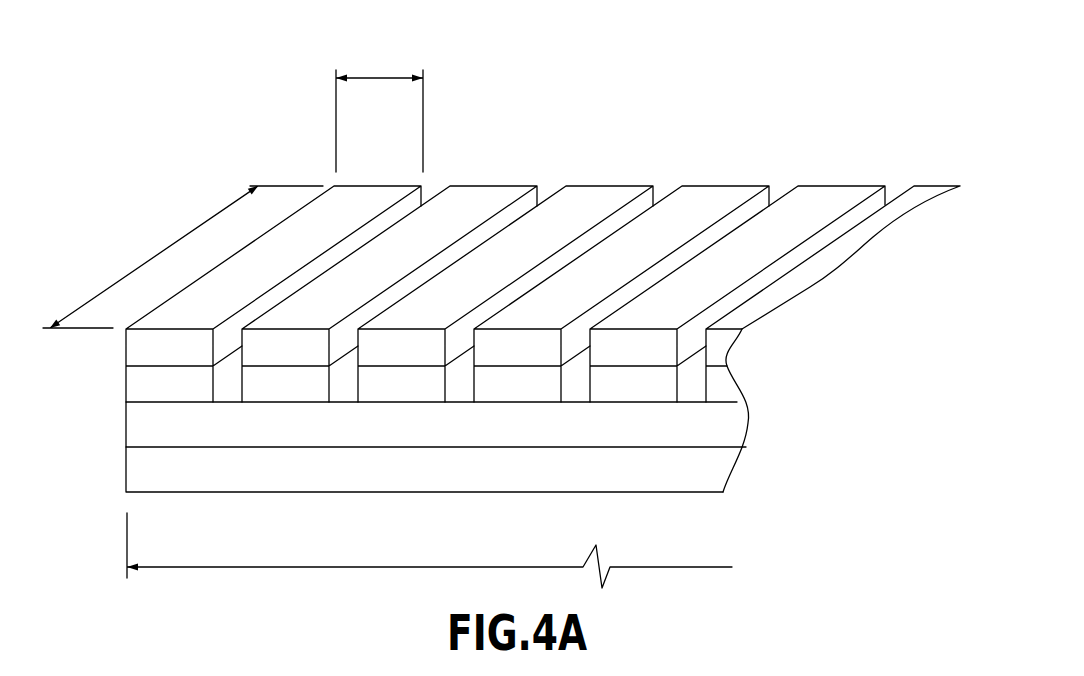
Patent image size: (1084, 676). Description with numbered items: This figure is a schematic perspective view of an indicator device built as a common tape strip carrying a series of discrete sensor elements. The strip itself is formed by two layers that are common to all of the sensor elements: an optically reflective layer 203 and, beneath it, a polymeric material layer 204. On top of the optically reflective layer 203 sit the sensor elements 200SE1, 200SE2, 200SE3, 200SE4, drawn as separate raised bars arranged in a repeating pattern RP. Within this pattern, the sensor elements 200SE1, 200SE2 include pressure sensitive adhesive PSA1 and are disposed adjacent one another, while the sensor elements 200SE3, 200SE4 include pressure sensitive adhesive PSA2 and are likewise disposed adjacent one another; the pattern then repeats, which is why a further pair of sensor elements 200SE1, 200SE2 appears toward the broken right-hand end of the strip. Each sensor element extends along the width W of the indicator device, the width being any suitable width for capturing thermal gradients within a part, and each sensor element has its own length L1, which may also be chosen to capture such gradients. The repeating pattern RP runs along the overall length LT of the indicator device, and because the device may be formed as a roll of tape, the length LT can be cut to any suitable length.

The sensor element 200SE1 is at (397, 186).
The sensor element 200SE2 is at (513, 186).
The sensor element 200SE3 is at (628, 186).
The sensor element 200SE4 is at (750, 187).
The optically reflective layer 203 is at (142, 420).
The polymeric material layer 204 is at (713, 465).
The repeating pattern RP is at (302, 146).
The width W is at (176, 242).
The length L1 is at (373, 73).
The length LT is at (413, 567).